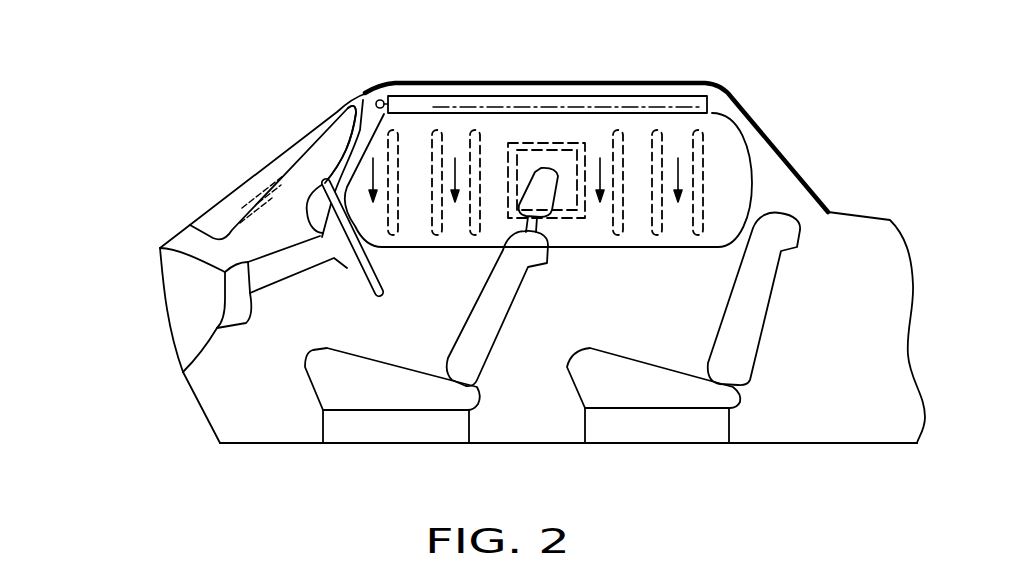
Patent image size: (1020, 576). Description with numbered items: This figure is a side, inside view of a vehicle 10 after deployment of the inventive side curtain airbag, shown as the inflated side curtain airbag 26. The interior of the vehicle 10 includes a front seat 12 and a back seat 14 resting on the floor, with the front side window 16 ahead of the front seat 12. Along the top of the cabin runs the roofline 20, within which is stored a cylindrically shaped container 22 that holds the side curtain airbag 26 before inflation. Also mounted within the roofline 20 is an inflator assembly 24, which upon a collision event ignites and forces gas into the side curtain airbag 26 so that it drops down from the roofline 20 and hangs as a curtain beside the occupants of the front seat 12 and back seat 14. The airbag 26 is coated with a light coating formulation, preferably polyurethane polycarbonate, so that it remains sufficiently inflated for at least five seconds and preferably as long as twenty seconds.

The vehicle 10 is at (195, 175).
The front seat 12 is at (382, 412).
The back seat 14 is at (658, 412).
The front side window 16 is at (317, 193).
The roofline 20 is at (478, 79).
The cylindrically shaped container 22 is at (417, 93).
The inflator assembly 24 is at (374, 93).
The side curtain airbag 26 is at (576, 128).